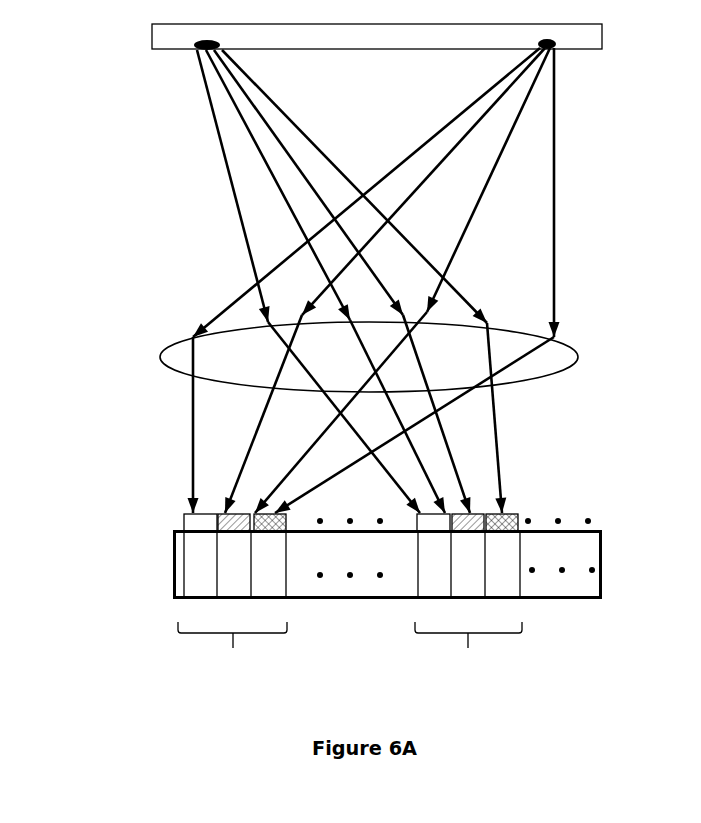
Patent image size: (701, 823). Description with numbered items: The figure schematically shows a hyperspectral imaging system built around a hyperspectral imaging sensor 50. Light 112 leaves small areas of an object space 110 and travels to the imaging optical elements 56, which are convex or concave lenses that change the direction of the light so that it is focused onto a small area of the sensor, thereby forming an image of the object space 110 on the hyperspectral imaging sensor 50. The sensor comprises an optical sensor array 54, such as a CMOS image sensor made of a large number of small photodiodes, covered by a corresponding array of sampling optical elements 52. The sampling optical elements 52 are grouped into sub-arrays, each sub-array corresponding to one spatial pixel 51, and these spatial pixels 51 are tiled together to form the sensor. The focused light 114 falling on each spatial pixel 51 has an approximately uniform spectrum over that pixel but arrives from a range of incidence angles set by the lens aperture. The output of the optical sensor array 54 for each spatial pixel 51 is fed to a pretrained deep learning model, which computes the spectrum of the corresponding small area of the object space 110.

The object space 110 is at (377, 37).
The light coming from the object space 112 is at (215, 132).
The imaging optical elements 56 is at (180, 362).
The light falling on each spatial pixel 114 is at (498, 455).
The hyperspectral imaging sensor 50 is at (364, 535).
The spatial pixel 51 is at (350, 665).
The sampling optical elements 52 is at (510, 515).
The optical sensor array 54 is at (573, 582).